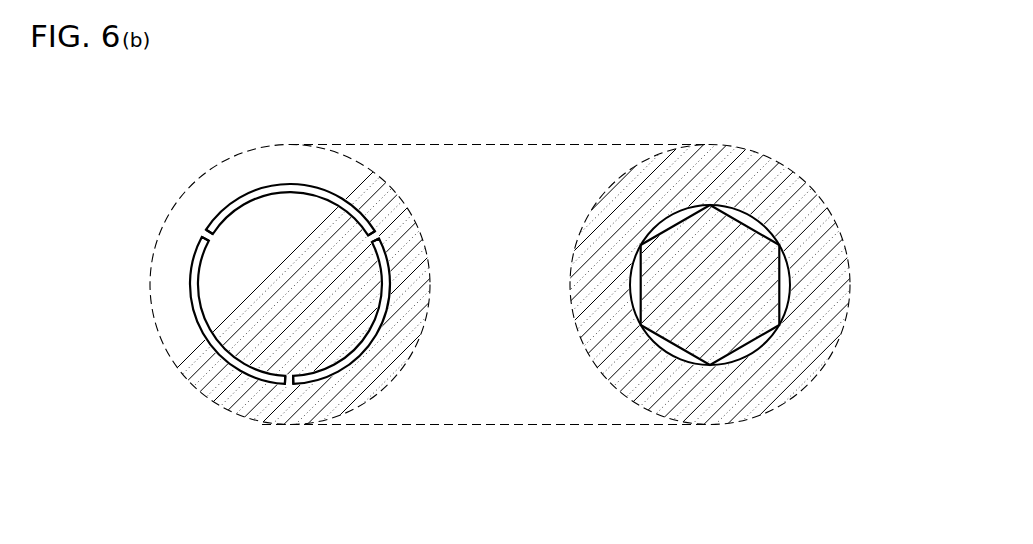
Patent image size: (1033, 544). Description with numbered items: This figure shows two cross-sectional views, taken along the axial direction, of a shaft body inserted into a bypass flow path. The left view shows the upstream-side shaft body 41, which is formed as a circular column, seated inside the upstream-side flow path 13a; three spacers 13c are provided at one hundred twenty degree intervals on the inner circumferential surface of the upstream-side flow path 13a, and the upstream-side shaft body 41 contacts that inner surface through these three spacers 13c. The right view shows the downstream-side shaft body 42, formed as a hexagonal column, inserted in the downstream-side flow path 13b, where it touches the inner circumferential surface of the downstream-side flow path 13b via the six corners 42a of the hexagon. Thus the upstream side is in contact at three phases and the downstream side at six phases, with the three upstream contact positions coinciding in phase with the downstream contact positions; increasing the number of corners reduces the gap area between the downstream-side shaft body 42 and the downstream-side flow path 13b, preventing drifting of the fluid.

The upstream-side flow path 13a is at (352, 318).
The downstream-side flow path 13b is at (758, 350).
The spacer 13c is at (206, 233).
The upstream-side shaft body 41 is at (396, 282).
The downstream-side shaft body 42 is at (726, 284).
The corner of hexagonal shaft 42a is at (712, 205).